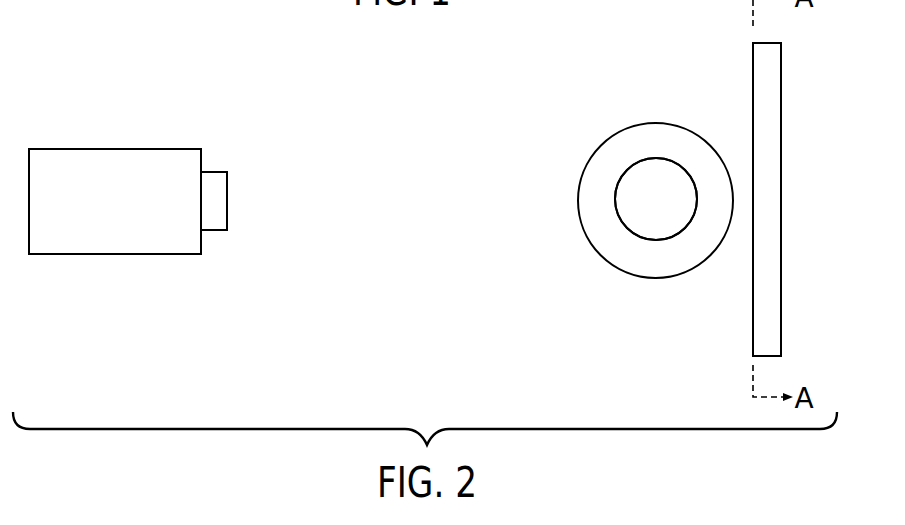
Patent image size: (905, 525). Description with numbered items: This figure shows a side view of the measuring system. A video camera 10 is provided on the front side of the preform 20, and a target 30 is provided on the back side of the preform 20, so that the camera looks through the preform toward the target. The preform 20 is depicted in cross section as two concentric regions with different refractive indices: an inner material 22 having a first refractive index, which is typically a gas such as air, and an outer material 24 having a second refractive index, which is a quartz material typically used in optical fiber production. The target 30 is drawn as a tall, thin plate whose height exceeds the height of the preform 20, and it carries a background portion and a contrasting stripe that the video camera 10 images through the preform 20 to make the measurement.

The video camera 10 is at (112, 149).
The preform 20 is at (578, 202).
The inner material 22 is at (654, 165).
The outer material 24 is at (598, 172).
The target 30 is at (772, 106).